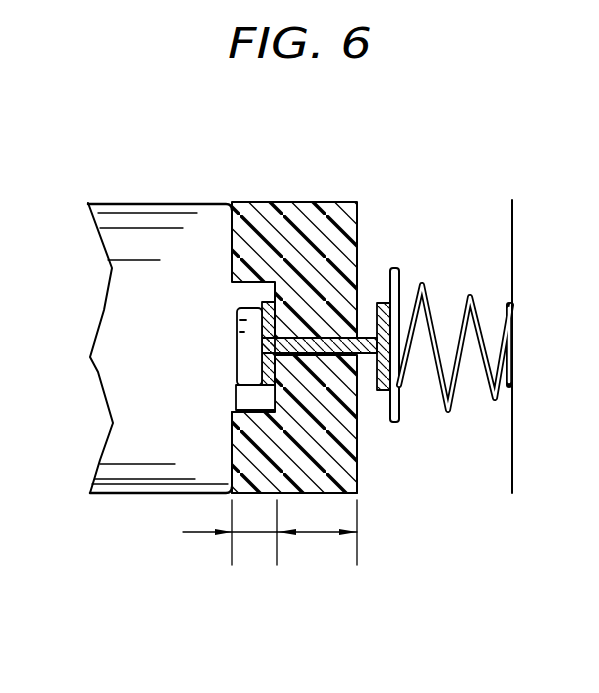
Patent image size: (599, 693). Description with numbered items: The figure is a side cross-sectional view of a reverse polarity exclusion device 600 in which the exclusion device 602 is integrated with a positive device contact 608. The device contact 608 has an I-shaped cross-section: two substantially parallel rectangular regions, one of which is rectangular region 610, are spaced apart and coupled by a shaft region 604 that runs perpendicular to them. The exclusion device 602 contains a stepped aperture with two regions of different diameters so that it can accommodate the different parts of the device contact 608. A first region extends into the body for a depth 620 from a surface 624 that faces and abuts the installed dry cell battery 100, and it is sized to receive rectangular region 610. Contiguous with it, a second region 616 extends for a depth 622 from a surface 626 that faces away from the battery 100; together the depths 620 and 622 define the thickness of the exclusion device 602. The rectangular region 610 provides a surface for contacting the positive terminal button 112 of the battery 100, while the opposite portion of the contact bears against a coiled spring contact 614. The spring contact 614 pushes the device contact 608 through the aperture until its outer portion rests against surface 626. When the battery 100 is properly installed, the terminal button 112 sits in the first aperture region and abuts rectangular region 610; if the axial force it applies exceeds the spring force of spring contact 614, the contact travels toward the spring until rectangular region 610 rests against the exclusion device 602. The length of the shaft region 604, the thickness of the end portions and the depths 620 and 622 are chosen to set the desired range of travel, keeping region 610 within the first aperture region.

The dry cell battery 100 is at (108, 366).
The positive terminal button 112 is at (245, 345).
The reverse polarity exclusion device 600 is at (432, 170).
The exclusion device 602 is at (303, 202).
The shaft region 604 is at (320, 336).
The positive device contact 608 is at (363, 335).
The rectangular region 610 is at (246, 308).
The coiled spring contact 614 is at (470, 298).
The second region 616 is at (270, 304).
The depth 620 is at (252, 535).
The depth 622 is at (388, 398).
The surface 624 is at (230, 443).
The surface 626 is at (358, 478).